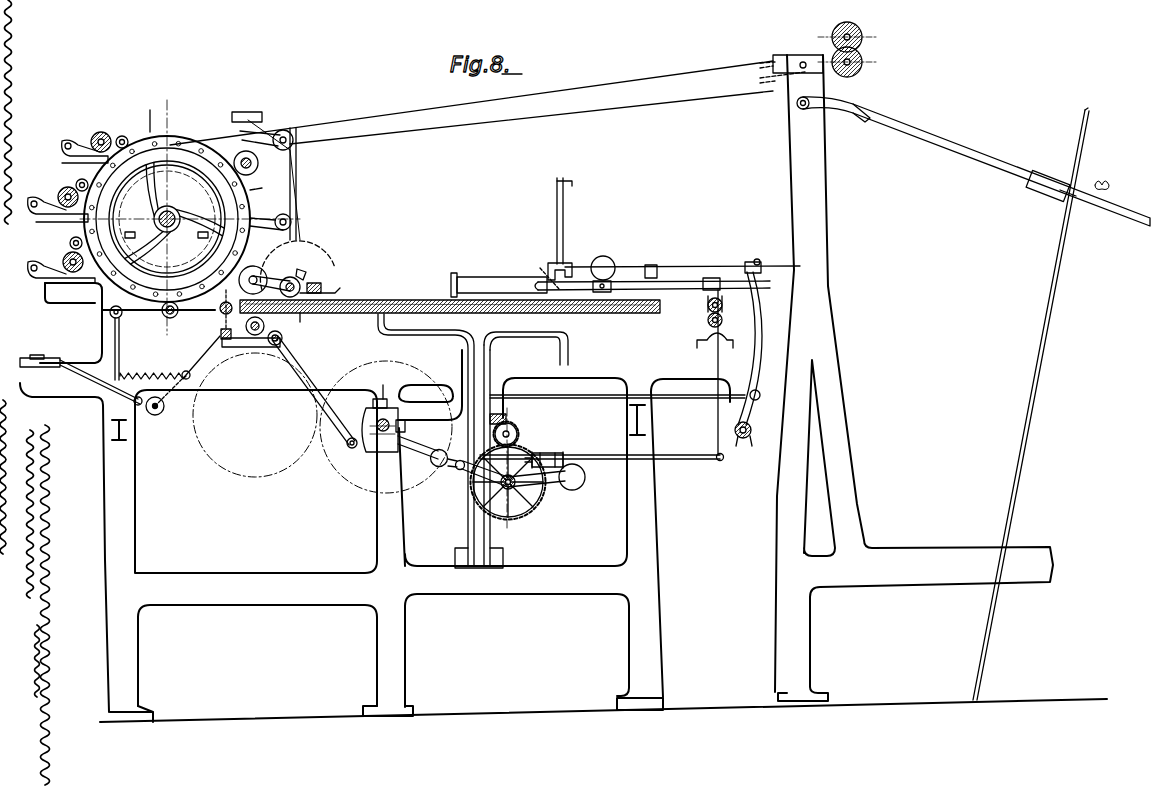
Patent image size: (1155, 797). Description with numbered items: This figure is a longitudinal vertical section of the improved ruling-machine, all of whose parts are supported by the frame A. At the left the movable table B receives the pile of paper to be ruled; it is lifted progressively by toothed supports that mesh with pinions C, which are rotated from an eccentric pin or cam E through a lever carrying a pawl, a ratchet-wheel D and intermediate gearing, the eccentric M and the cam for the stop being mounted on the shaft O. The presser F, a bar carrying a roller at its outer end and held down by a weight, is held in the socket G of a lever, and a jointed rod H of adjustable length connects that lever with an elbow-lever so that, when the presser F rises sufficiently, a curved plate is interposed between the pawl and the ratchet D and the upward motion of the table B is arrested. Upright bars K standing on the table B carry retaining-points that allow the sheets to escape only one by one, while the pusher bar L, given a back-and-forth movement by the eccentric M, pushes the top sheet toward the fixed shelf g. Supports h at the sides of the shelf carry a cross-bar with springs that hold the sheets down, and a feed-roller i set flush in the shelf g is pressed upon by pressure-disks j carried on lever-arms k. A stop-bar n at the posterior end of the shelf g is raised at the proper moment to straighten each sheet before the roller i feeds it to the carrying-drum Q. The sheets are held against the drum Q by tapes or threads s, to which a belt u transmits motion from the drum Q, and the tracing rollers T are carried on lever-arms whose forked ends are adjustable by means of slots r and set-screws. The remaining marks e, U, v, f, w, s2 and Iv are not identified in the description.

The frame A is at (563, 388).
The carrying-drum Q is at (190, 217).
The curved spokes of wheel e is at (175, 214).
The roller discs U is at (165, 201).
The rollers T is at (185, 326).
The belt u is at (299, 180).
The tapes or threads s is at (406, 138).
The belt pulleys v is at (818, 50).
The feed lever f is at (925, 134).
The slots r is at (1031, 404).
The movable table B is at (370, 304).
The stop-bar n is at (301, 376).
The rocking lever w is at (313, 390).
The pressure-disks j is at (253, 272).
The lever-arms k is at (299, 269).
The supports h is at (321, 280).
The fixed shelf g is at (307, 321).
The eccentric pin or cam E is at (376, 418).
The shaft O is at (387, 416).
The feed-roller i is at (322, 423).
The hand lever linkage s2 is at (120, 376).
The bar L is at (570, 278).
The upright bars K is at (560, 232).
The presser F is at (520, 283).
The eccentric M is at (750, 418).
The socket G is at (708, 406).
The jointed rod H is at (683, 460).
The pinions C is at (515, 434).
The ratchet-wheel D is at (458, 470).
The frame bracket Iv is at (208, 153).